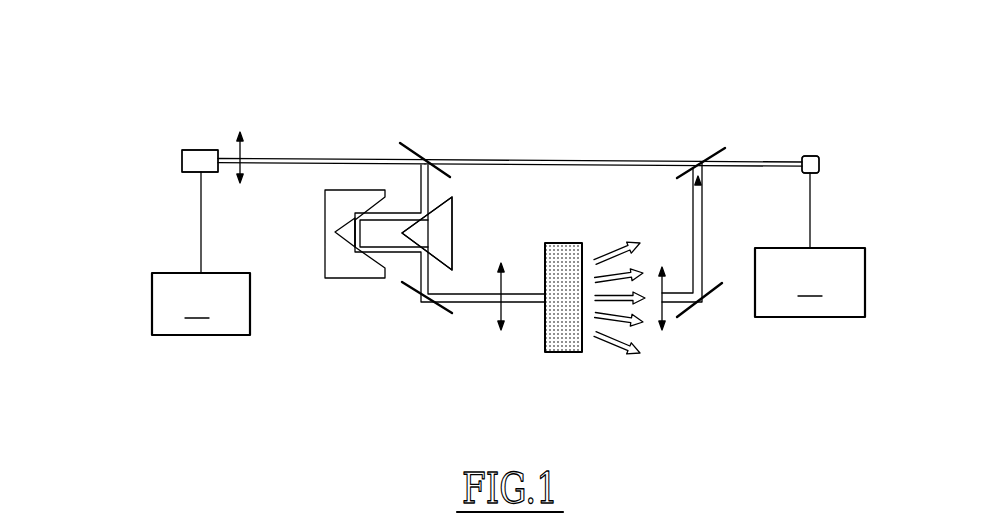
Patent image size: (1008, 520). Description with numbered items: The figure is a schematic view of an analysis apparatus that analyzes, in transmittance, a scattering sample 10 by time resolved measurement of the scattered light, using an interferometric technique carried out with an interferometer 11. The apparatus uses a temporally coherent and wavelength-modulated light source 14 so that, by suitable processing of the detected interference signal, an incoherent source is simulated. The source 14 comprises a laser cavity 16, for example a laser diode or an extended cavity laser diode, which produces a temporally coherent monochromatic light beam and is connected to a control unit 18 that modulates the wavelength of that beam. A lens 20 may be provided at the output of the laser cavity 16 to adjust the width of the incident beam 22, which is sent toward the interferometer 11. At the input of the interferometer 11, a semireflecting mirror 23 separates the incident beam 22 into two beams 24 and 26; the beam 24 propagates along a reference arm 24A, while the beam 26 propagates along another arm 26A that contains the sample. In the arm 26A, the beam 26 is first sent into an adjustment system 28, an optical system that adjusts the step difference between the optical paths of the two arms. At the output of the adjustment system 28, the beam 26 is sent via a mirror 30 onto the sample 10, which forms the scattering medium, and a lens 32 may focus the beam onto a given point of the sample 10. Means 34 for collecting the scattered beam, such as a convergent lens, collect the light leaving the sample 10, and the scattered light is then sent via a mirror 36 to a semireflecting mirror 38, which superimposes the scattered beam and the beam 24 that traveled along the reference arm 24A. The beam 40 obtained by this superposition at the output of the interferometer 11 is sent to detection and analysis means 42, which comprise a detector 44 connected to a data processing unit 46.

The scattering sample 10 is at (573, 363).
The interferometer 11 is at (468, 97).
The light source 14 is at (166, 156).
The laser cavity 16 is at (200, 163).
The control unit 18 is at (201, 304).
The lens 20 is at (242, 166).
The incident beam 22 is at (280, 158).
The semireflecting mirror 23 is at (402, 148).
The beam 24 is at (548, 160).
The reference arm 24A is at (530, 113).
The beam 26 is at (428, 188).
The arm 26A is at (473, 268).
The adjustment system 28 is at (338, 283).
The mirror 30 is at (443, 317).
The lens 32 is at (505, 303).
The means for collecting the scattered beam 34 is at (663, 290).
The mirror 36 is at (717, 292).
The semireflecting mirror 38 is at (707, 158).
The beam 40 is at (752, 161).
The detection and analysis means 42 is at (835, 157).
The detector 44 is at (808, 175).
The data processing unit 46 is at (810, 282).